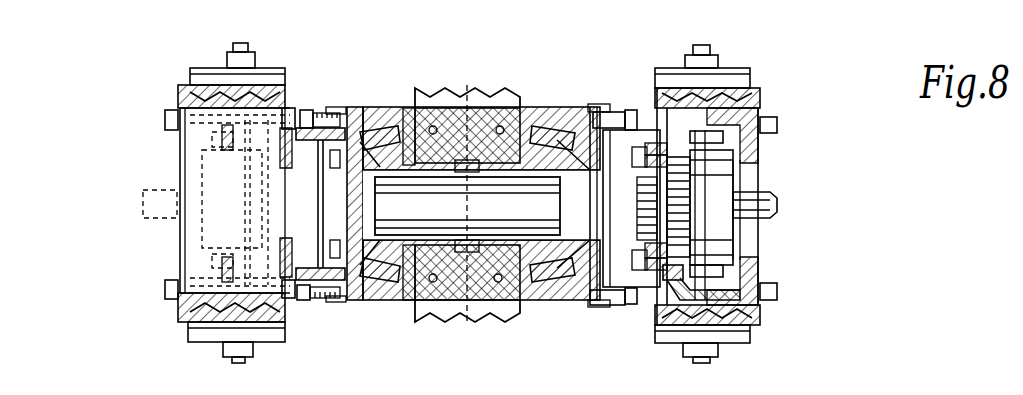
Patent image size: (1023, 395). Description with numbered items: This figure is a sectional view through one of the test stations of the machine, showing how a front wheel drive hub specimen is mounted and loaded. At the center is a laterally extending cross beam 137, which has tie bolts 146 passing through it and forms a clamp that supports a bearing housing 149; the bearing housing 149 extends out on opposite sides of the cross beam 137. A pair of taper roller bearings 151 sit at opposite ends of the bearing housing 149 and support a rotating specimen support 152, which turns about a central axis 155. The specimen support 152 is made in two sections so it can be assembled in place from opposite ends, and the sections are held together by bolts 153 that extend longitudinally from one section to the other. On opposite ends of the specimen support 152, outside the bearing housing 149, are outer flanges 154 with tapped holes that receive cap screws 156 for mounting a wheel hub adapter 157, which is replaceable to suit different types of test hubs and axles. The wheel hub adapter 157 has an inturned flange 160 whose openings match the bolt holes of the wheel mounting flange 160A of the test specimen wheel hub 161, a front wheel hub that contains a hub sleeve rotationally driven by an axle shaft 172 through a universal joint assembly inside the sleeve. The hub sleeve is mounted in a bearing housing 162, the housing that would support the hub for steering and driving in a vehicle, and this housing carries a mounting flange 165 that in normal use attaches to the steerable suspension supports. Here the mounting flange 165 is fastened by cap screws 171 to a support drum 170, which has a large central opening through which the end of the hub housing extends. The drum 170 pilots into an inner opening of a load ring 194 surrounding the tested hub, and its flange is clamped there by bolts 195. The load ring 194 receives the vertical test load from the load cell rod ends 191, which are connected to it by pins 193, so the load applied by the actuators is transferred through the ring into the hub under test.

The cross beam 137 is at (452, 87).
The tie bolts 146 is at (497, 126).
The bearing housing 149 is at (392, 107).
The taper roller bearings 151 is at (378, 127).
The rotating specimen support 152 is at (412, 150).
The bolts 153 is at (340, 186).
The outer flanges 154 is at (330, 107).
The central axis 155 is at (722, 187).
The cap screws 156 is at (301, 110).
The wheel hub adapter 157 is at (287, 109).
The inturned flange 160 is at (673, 243).
The wheel mounting flange 160A is at (660, 147).
The wheel hub 161 is at (655, 185).
The bearing housing 162 is at (670, 175).
The mounting flange 165 is at (690, 273).
The support drum 170 is at (757, 278).
The cap screws 171 is at (723, 268).
The axle shaft 172 is at (778, 203).
The rod ends 191 is at (227, 58).
The pins 193 is at (247, 47).
The load ring 194 is at (740, 80).
The bolts 195 is at (165, 282).